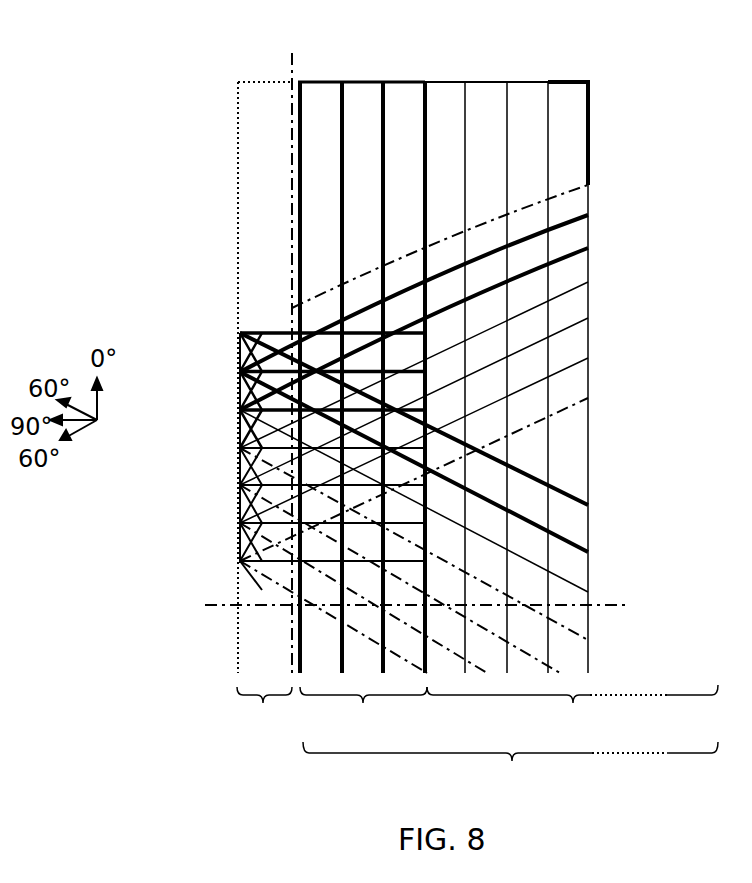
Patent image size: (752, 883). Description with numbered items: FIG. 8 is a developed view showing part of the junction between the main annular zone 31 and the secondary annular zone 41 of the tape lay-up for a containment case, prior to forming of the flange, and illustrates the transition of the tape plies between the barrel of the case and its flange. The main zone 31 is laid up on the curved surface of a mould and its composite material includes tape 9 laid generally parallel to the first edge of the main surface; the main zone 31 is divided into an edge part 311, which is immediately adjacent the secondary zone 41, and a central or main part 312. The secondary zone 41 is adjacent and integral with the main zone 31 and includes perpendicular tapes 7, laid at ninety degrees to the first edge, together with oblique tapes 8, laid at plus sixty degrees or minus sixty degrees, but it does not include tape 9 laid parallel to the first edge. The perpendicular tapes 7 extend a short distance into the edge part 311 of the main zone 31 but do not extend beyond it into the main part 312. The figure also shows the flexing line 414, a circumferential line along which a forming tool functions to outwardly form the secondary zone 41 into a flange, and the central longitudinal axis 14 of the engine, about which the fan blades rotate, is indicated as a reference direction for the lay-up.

The perpendicular tapes 7 is at (238, 473).
The oblique tapes 8 is at (575, 565).
The parallel tape 9 is at (368, 92).
The central longitudinal axis 14 is at (612, 605).
The main zone 31 is at (512, 761).
The secondary zone 41 is at (263, 703).
The edge part 311 is at (363, 703).
The main part 312 is at (573, 703).
The flexing line 414 is at (291, 62).